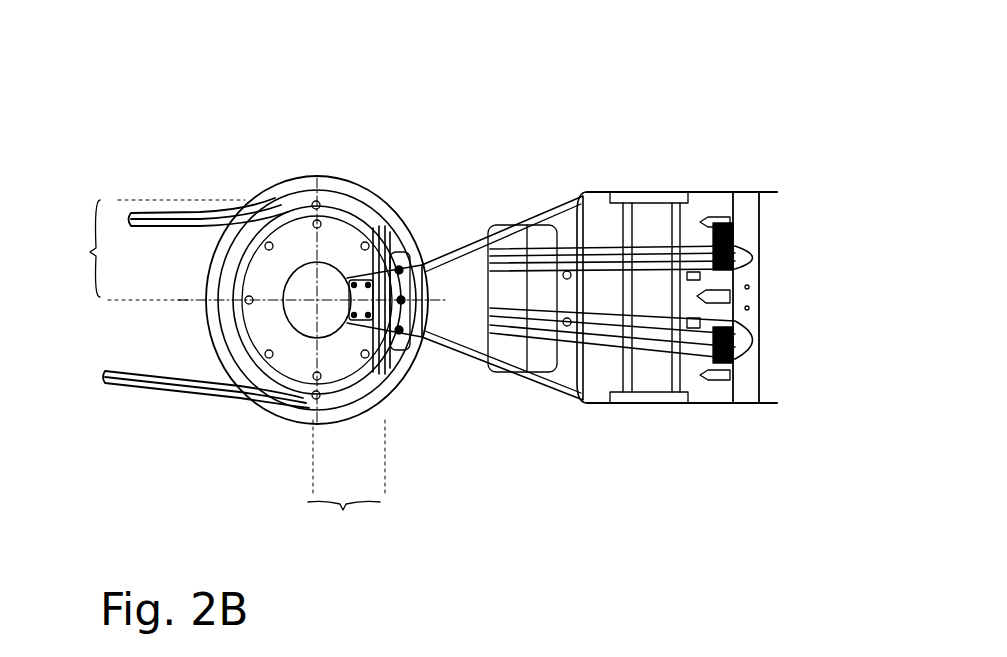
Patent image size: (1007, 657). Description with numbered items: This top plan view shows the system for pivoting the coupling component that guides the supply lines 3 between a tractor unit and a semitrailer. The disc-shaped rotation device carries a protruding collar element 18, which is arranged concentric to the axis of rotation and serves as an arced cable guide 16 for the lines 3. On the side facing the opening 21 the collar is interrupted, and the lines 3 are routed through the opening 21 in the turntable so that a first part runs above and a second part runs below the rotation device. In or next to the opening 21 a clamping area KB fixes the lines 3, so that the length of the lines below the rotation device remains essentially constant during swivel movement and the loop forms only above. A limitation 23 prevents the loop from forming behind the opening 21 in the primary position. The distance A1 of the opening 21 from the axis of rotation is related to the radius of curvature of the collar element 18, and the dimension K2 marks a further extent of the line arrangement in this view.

The lines 3 is at (190, 207).
The cable guide 16 is at (323, 186).
The collar element 18 is at (352, 200).
The opening 21 is at (413, 262).
The limitation 23 is at (423, 272).
The dimension K2 is at (146, 250).
The clamping area KB is at (362, 333).
The distance of the opening to the axis of rotation A1 is at (346, 491).